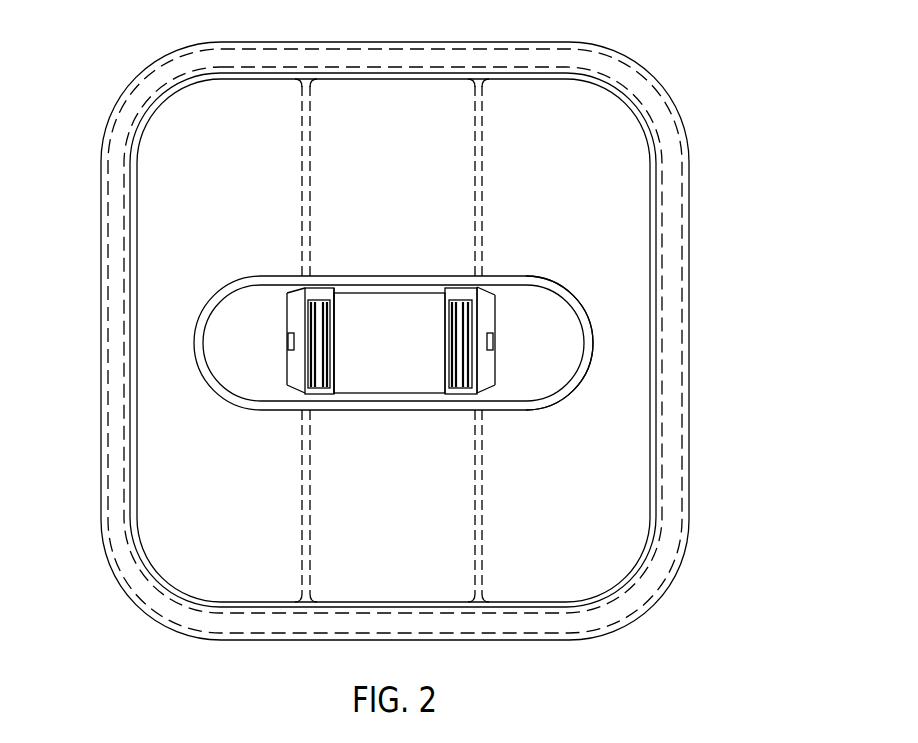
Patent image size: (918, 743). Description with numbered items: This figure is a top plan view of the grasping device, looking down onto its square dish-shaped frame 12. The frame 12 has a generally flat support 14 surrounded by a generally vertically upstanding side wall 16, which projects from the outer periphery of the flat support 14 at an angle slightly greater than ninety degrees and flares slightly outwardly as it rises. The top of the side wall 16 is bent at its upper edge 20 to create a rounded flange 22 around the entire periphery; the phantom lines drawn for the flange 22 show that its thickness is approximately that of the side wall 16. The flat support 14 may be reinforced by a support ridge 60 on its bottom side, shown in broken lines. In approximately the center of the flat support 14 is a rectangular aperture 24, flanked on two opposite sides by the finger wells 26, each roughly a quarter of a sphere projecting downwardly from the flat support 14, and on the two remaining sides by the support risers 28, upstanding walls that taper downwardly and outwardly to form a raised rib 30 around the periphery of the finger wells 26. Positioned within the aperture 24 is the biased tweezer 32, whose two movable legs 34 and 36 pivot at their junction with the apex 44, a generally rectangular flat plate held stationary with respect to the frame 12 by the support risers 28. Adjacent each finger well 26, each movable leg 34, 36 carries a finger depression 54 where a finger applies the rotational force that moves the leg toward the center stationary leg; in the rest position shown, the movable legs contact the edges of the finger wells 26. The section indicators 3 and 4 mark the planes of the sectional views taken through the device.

The section line 3- 3 is at (53, 370).
The section line 4- 4 is at (402, 38).
The frame 12 is at (688, 422).
The generally flat support 14 is at (573, 530).
The side wall 16 is at (138, 445).
The upper edge 20 is at (645, 490).
The rounded flange 22 is at (662, 553).
The rectangular aperture 24 is at (492, 290).
The finger well 26 is at (565, 346).
The support riser 28 is at (374, 285).
The raised rib 30 is at (582, 370).
The biased tweezer 32 is at (343, 290).
The movable leg 34 is at (305, 288).
The movable leg 36 is at (478, 393).
The apex 44 is at (408, 355).
The finger depression 54 is at (463, 300).
The support ridge 60 is at (312, 564).